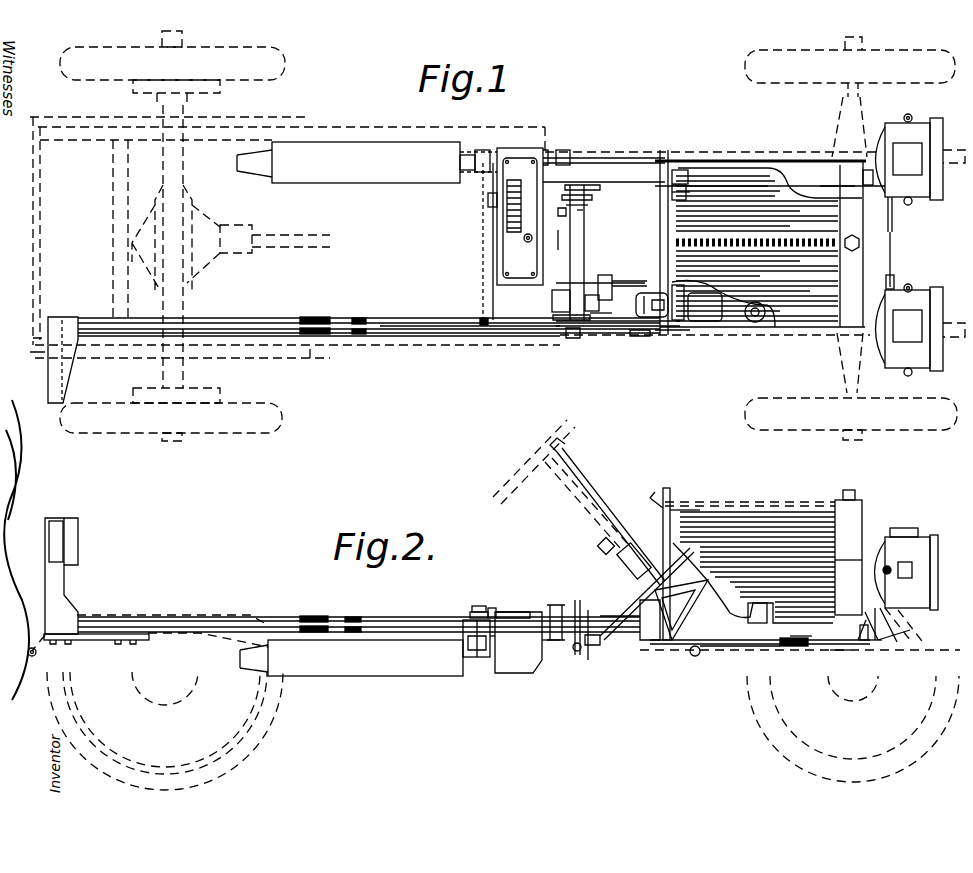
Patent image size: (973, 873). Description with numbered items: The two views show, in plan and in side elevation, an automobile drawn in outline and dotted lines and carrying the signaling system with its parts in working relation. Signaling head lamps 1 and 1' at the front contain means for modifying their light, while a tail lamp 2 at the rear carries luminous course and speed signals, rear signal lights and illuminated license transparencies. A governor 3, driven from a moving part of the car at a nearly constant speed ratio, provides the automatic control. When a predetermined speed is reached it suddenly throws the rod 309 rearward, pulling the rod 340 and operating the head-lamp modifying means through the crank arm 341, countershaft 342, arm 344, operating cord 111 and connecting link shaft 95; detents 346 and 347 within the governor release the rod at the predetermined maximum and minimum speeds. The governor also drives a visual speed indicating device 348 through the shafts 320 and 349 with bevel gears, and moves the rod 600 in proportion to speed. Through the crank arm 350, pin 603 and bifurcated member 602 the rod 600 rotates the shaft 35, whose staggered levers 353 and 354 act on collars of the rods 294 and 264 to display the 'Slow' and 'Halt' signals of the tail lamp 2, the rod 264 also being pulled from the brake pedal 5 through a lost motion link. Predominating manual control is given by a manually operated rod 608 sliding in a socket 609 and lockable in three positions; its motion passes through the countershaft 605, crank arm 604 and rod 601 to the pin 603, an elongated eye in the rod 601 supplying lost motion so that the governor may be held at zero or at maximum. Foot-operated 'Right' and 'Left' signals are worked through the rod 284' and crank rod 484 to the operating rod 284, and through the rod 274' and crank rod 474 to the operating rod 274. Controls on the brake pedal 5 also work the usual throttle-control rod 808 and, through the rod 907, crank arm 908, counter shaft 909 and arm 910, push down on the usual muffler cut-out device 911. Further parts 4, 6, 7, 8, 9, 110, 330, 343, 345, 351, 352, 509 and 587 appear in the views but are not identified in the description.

In FIG. 1, the signaling head lamp 1 is at (916, 157).
In FIG. 2, the signaling head lamp 1 is at (916, 569).
In FIG. 1, the signaling head lamp 1' is at (921, 330).
In FIG. 1, the tail lamp 2 is at (48, 370).
In FIG. 2, the tail lamp 2 is at (64, 583).
In FIG. 1, the governor 3 is at (520, 216).
In FIG. 1, the rod 4 is at (629, 273).
In FIG. 1, the brake pedal 5 is at (614, 334).
In FIG. 2, the brake pedal 5 is at (612, 618).
In FIG. 1, the cylinder 6 is at (652, 294).
In FIG. 2, the cylinder 6 is at (634, 543).
In FIG. 1, the plate 7 is at (672, 335).
In FIG. 2, the plate 7 is at (630, 618).
In FIG. 1, the bracket 8 is at (590, 304).
In FIG. 2, the bracket 8 is at (761, 623).
In FIG. 1, the bracket 9 is at (598, 280).
In FIG. 1, the shaft 35 is at (573, 245).
In FIG. 1, the connecting link shaft 95 is at (892, 264).
In FIG. 2, the bracket 110 is at (890, 632).
In FIG. 2, the operating cord 111 is at (900, 625).
In FIG. 1, the rod 264 is at (205, 318).
In FIG. 2, the rod 264 is at (355, 621).
In FIG. 1, the operating rod of the 'Left' signal 274 is at (470, 300).
In FIG. 1, the rod 274' is at (603, 263).
In FIG. 1, the operating rod of the 'Right' signal 284 is at (369, 314).
In FIG. 1, the rod 284' is at (570, 350).
In FIG. 1, the rod 294 is at (418, 336).
In FIG. 2, the rod 294 is at (270, 624).
In FIG. 1, the rod 309 is at (540, 150).
In FIG. 1, the shaft 320 is at (646, 160).
In FIG. 2, the frame rail 330 is at (768, 645).
In FIG. 1, the rod 340 is at (762, 160).
In FIG. 1, the crank arm 341 is at (858, 152).
In FIG. 2, the crank arm 341 is at (858, 642).
In FIG. 1, the countershaft 342 is at (863, 176).
In FIG. 2, the countershaft 342 is at (860, 634).
In FIG. 1, the rail 343 is at (835, 188).
In FIG. 1, the arm 344 is at (896, 208).
In FIG. 2, the arm 344 is at (895, 647).
In FIG. 2, the bracket 345 is at (876, 644).
In FIG. 2, the detent 346 is at (820, 652).
In FIG. 2, the detent 347 is at (804, 645).
In FIG. 1, the visual speed indicating device 348 is at (665, 170).
In FIG. 2, the visual speed indicating device 348 is at (663, 512).
In FIG. 2, the shaft 349 is at (674, 528).
In FIG. 1, the crank arm 350 is at (562, 216).
In FIG. 1, the bracket 351 is at (588, 220).
In FIG. 1, the bracket 352 is at (572, 338).
In FIG. 2, the bracket 352 is at (590, 648).
In FIG. 2, the lever 353 is at (592, 650).
In FIG. 2, the lever 354 is at (573, 615).
In FIG. 1, the crank rod 474 is at (552, 300).
In FIG. 2, the crank rod 474 is at (492, 636).
In FIG. 1, the crank rod 484 is at (558, 322).
In FIG. 2, the crank rod 484 is at (572, 640).
In FIG. 1, the bracket 509 is at (562, 150).
In FIG. 2, the bracket 587 is at (522, 672).
In FIG. 1, the rod 600 is at (584, 183).
In FIG. 2, the rod 600 is at (548, 650).
In FIG. 1, the rod 601 is at (596, 186).
In FIG. 2, the rod 601 is at (665, 645).
In FIG. 1, the bifurcated member 602 is at (600, 200).
In FIG. 1, the pin 603 is at (605, 207).
In FIG. 1, the crank arm 604 is at (688, 176).
In FIG. 2, the crank arm 604 is at (720, 575).
In FIG. 1, the countershaft 605 is at (688, 193).
In FIG. 2, the countershaft 605 is at (680, 548).
In FIG. 1, the manually operated rod 608 is at (641, 337).
In FIG. 2, the manually operated rod 608 is at (600, 510).
In FIG. 2, the socket 609 is at (614, 549).
In FIG. 1, the throttle-control rod 808 is at (482, 318).
In FIG. 2, the throttle-control rod 808 is at (682, 612).
In FIG. 2, the rod 907 is at (504, 612).
In FIG. 2, the crank arm 908 is at (460, 634).
In FIG. 1, the counter shaft 909 is at (488, 200).
In FIG. 2, the counter shaft 909 is at (489, 608).
In FIG. 1, the arm 910 is at (488, 152).
In FIG. 2, the arm 910 is at (476, 606).
In FIG. 1, the muffler cut-out device 911 is at (468, 154).
In FIG. 2, the muffler cut-out device 911 is at (470, 615).